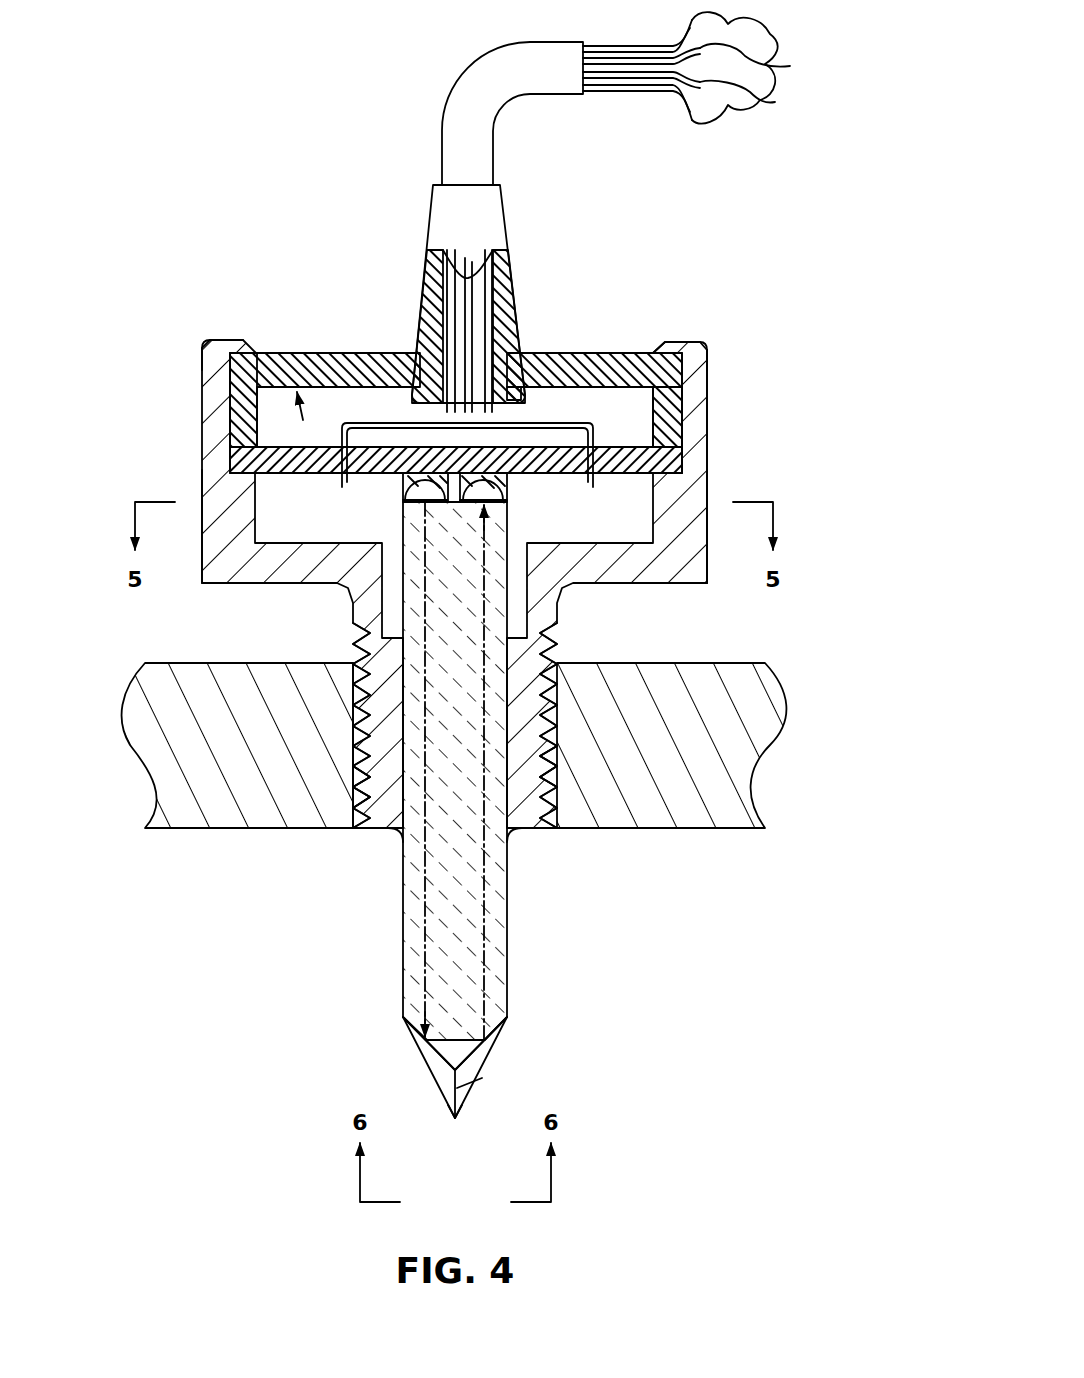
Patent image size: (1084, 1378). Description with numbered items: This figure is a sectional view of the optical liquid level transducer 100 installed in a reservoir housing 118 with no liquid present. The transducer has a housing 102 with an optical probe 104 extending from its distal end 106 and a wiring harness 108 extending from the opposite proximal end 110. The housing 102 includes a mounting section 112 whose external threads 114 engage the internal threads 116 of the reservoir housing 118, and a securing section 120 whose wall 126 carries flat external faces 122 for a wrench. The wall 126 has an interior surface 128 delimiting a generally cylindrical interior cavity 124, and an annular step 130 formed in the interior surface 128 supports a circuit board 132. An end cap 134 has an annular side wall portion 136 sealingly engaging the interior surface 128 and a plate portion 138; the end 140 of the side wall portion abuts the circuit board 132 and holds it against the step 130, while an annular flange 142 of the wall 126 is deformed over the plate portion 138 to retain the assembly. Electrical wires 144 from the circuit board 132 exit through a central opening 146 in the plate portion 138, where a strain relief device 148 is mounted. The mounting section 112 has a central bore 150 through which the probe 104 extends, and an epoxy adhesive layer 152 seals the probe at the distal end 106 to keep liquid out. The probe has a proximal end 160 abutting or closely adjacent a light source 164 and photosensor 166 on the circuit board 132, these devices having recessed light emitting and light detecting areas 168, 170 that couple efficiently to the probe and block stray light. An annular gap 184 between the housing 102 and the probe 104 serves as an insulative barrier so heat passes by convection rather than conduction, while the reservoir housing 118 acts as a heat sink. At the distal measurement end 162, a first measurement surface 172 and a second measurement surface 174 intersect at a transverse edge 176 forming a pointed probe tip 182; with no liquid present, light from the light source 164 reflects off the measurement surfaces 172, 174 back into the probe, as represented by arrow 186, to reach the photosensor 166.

The optical liquid level transducer 100 is at (178, 170).
The housing 102 is at (170, 408).
The optical probe 104 is at (512, 947).
The distal end 106 is at (525, 828).
The wiring harness 108 is at (437, 113).
The proximal end 110 is at (686, 342).
The mounting section 112 is at (563, 695).
The external threads 114 is at (365, 825).
The internal threads 116 is at (370, 818).
The reservoir housing 118 is at (243, 828).
The securing section 120 is at (710, 418).
The external faces 122 is at (203, 470).
The interior cavity 124 is at (333, 355).
The wall 126 is at (200, 365).
The interior surface 128 is at (260, 520).
The annular step 130 is at (230, 455).
The circuit board 132 is at (610, 445).
The end cap 134 is at (608, 352).
The annular side wall portion 136 is at (708, 390).
The plate portion 138 is at (405, 356).
The end 140 is at (705, 462).
The annular flange 142 is at (252, 350).
The electrical wires 144 is at (400, 408).
The central opening 146 is at (545, 368).
The strain relief device 148 is at (493, 220).
The central bore 150 is at (540, 773).
The epoxy adhesive layer 152 is at (394, 836).
The proximal end 160 is at (510, 525).
The distal measurement end 162 is at (504, 1042).
The light source 164 is at (410, 497).
The photosensor 166 is at (505, 505).
The light emitting area 168 is at (400, 481).
The light detecting area 170 is at (498, 482).
The first measurement surface 172 is at (440, 1072).
The second measurement surface 174 is at (473, 1068).
The transverse edge 176 is at (470, 1082).
The probe tip 182 is at (455, 1120).
The annular gap 184 is at (392, 605).
The arrow 186 is at (403, 985).